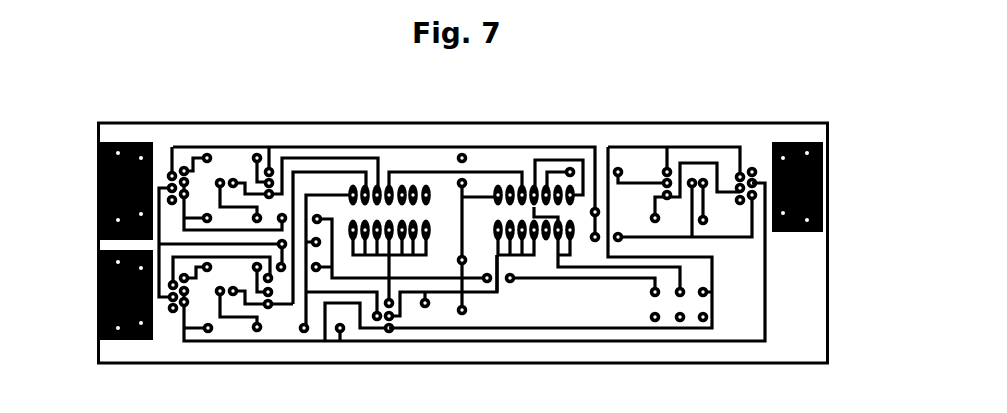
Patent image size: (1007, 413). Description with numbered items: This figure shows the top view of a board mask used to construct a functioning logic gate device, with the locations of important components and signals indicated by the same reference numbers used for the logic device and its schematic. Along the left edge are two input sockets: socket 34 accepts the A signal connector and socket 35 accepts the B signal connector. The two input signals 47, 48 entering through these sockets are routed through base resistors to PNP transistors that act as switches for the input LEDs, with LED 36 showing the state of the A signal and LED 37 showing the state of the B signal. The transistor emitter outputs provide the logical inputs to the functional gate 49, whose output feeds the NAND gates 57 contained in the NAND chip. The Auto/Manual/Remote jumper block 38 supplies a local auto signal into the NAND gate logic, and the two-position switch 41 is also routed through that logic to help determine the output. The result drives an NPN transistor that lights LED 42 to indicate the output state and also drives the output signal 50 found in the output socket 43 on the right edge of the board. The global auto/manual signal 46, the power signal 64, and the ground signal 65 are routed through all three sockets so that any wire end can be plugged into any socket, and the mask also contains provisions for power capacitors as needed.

The socket 34 is at (112, 137).
The socket 35 is at (119, 347).
The LED 36 is at (225, 172).
The LED 37 is at (228, 302).
The Auto/Manual/Remote jumper block 38 is at (397, 325).
The two-position switch 41 is at (690, 308).
The LED 42 is at (697, 175).
The output socket 43 is at (803, 135).
The global auto/manual signal 46 is at (153, 242).
The input signal 47 is at (190, 155).
The input signal 48 is at (193, 298).
The functional gate 49 is at (383, 215).
The output signal 50 is at (720, 193).
The NAND gates 57 is at (520, 210).
The power signal 64 is at (312, 147).
The ground signal 65 is at (715, 140).